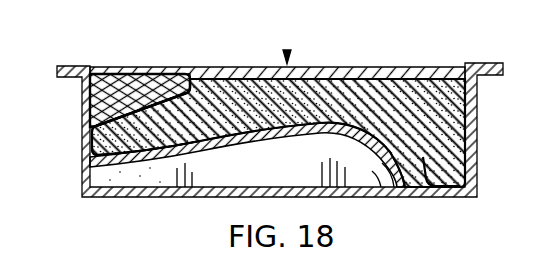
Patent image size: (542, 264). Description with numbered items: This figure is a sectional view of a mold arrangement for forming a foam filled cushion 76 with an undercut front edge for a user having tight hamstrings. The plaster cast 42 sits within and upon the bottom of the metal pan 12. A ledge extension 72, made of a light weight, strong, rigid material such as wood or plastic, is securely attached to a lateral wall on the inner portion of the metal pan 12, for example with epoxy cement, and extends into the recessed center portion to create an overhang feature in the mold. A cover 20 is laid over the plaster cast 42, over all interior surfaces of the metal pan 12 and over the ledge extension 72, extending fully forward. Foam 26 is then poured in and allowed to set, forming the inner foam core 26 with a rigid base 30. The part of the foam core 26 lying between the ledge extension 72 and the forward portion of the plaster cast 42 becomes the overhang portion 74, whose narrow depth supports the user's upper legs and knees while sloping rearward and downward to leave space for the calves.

The metal pan 12 is at (106, 197).
The cover 20 is at (228, 134).
The inner foam core 26 is at (400, 100).
The rigid base 30 is at (330, 70).
The plaster cast 42 is at (101, 166).
The ledge extension 72 is at (117, 86).
The overhang portion 74 is at (97, 133).
The cushion 76 is at (287, 50).